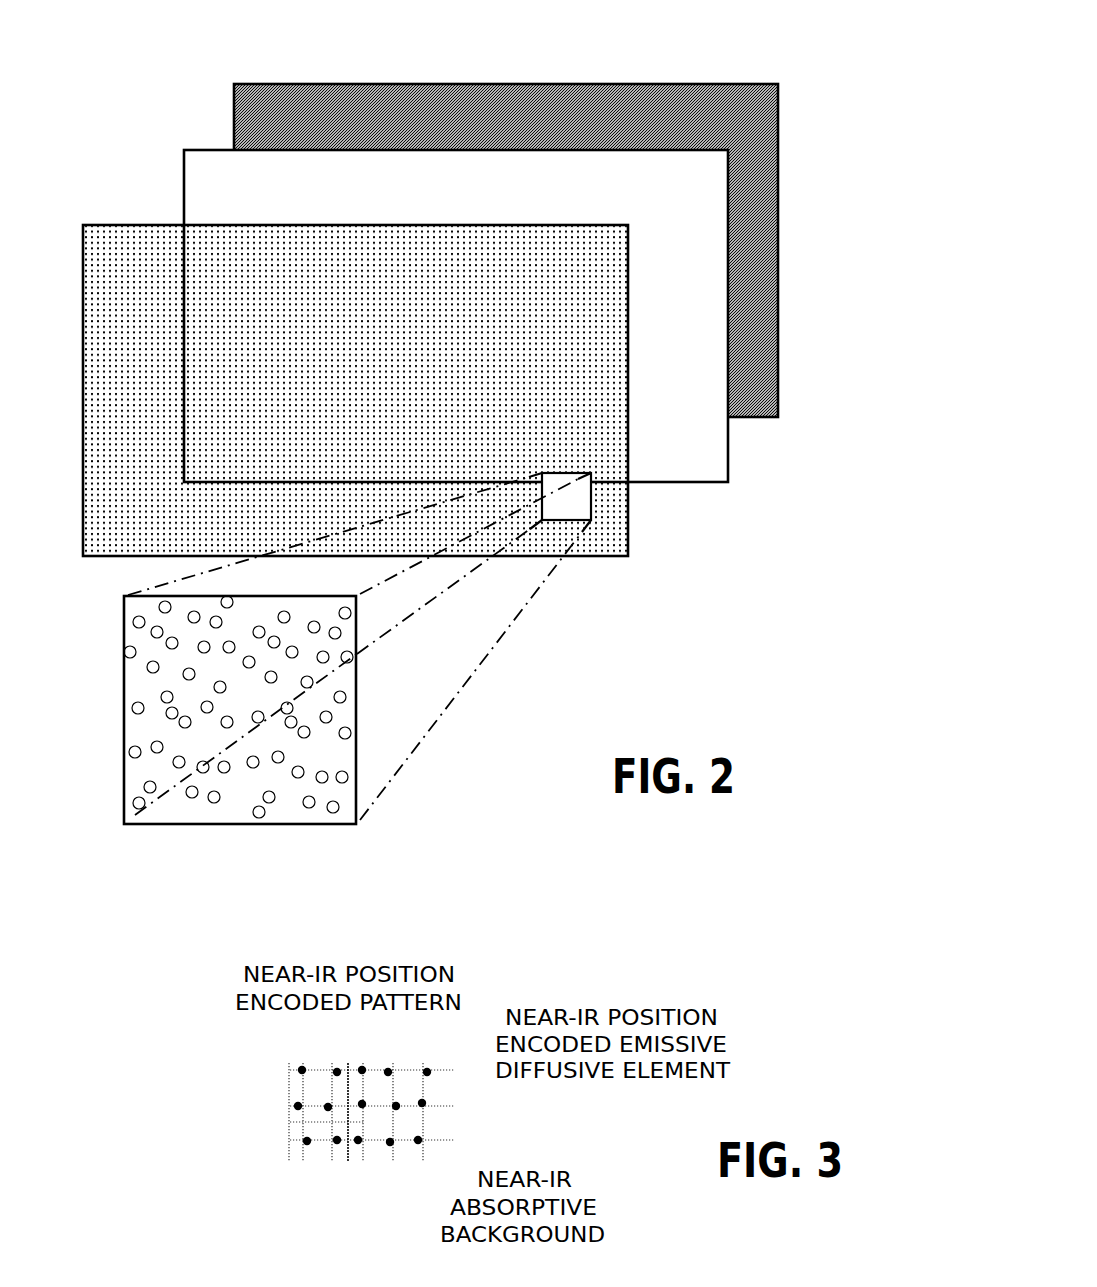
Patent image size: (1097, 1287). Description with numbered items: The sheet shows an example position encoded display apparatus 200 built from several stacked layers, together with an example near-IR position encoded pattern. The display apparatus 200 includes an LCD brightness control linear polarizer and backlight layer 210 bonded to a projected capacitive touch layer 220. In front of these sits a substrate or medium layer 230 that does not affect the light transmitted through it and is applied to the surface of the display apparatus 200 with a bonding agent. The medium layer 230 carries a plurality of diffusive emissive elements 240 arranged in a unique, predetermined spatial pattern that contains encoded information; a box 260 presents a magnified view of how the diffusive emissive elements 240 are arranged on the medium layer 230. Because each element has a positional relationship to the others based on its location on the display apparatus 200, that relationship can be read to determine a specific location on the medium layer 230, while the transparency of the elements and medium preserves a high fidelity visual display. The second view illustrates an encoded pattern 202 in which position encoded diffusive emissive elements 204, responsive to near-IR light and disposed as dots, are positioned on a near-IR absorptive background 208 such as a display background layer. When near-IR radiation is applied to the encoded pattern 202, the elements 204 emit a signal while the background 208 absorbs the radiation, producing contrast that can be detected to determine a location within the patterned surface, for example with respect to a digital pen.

In FIG. 2, the display apparatus 200 is at (678, 44).
In FIG. 2, the LCD brightness control linear polarizer and backlight layer 210 is at (268, 84).
In FIG. 2, the projected capacitive touch layer 220 is at (218, 150).
In FIG. 2, the medium layer 230 is at (155, 225).
In FIG. 2, the diffusive emissive elements 240 is at (150, 680).
In FIG. 2, the box 260 is at (356, 702).
In FIG. 3, the encoded pattern 202 is at (524, 968).
In FIG. 3, the position encoded diffusive emissive elements 204 is at (436, 1064).
In FIG. 3, the near-IR absorptive background 208 is at (380, 1132).